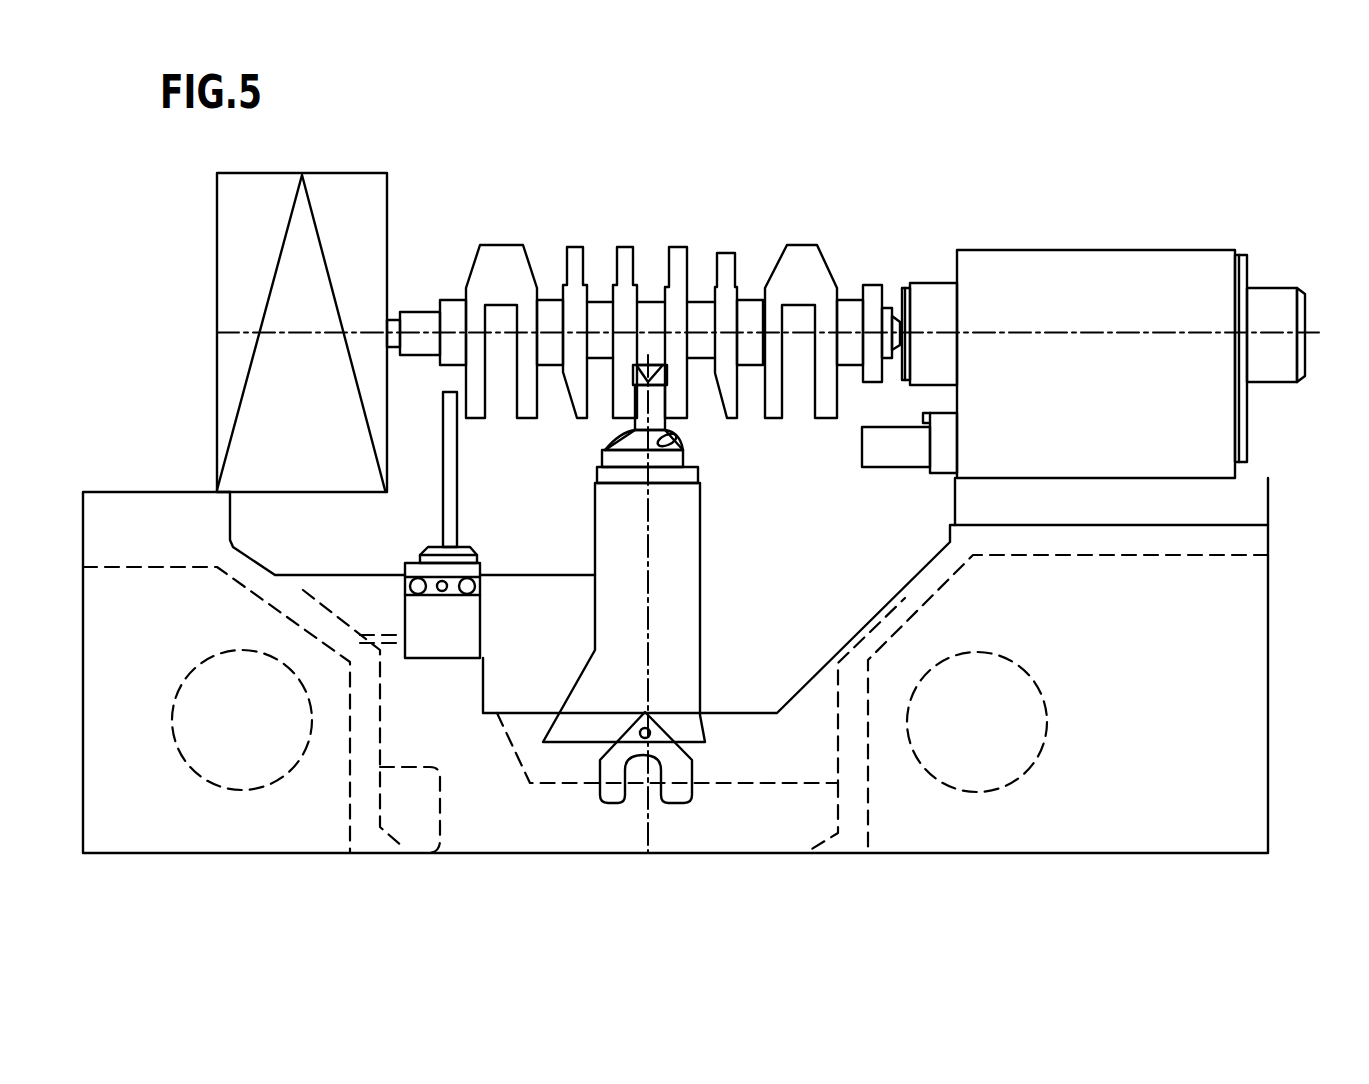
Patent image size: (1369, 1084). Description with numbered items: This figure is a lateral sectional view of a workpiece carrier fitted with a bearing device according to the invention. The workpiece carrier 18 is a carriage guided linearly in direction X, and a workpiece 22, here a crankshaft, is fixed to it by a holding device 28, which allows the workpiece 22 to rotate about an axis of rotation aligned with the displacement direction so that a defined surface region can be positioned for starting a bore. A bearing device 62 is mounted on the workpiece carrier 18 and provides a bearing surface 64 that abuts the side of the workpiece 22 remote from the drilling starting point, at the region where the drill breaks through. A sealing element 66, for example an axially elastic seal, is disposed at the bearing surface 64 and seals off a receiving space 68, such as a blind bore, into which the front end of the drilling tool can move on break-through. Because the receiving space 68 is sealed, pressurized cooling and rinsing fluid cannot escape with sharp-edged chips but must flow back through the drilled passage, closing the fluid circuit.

The workpiece carrier 18 is at (1227, 825).
The workpiece 22 is at (673, 255).
The holding device 28 is at (1075, 228).
The bearing device 62 is at (682, 596).
The bearing surface 64 is at (665, 377).
The sealing element 66 is at (645, 398).
The receiving space 68 is at (678, 445).